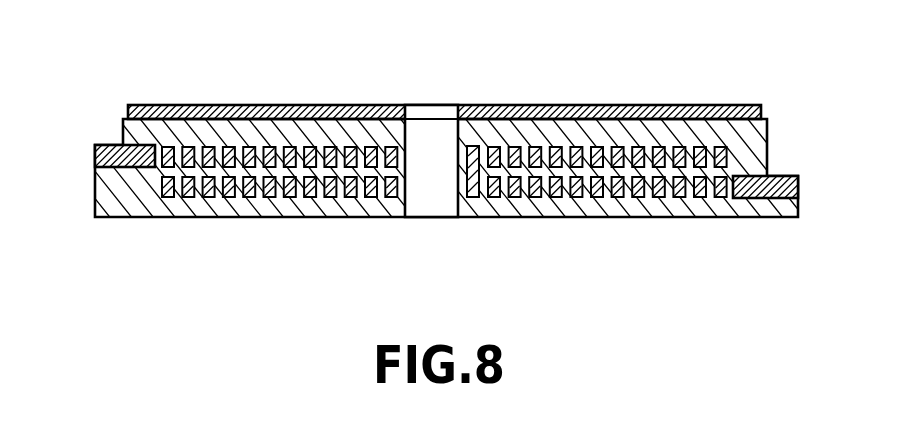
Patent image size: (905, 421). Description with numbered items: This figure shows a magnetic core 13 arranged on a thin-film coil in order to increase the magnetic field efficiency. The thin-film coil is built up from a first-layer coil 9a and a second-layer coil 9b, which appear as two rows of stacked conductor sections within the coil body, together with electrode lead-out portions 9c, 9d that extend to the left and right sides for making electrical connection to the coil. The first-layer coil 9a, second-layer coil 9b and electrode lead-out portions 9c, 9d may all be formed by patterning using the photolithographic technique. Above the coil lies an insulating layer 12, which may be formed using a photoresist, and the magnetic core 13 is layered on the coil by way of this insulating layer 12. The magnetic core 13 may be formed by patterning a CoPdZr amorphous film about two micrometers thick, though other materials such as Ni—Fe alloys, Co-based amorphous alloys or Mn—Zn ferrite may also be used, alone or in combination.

The insulating layer 12 is at (124, 143).
The magnetic core 13 is at (665, 105).
The first-layer coil 9a is at (726, 154).
The second-layer coil 9b is at (162, 182).
The electrode lead-out portion 9c is at (788, 176).
The electrode lead-out portion 9d is at (102, 152).